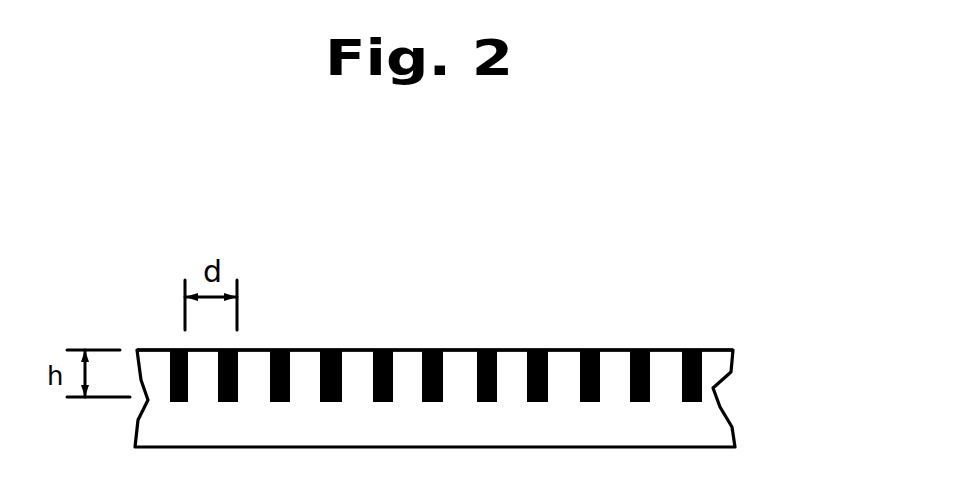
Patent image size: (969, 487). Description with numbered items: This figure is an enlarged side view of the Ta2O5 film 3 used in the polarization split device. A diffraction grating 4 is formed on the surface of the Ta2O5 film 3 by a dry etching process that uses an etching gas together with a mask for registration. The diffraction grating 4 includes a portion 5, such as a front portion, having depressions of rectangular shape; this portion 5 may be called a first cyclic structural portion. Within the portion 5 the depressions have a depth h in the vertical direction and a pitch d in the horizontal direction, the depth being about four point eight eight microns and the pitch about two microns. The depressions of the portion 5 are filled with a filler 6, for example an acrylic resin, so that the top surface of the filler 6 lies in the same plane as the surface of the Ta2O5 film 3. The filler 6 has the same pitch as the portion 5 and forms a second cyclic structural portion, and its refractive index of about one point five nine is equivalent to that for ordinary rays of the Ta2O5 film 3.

The Ta2O5 film 3 is at (713, 388).
The diffraction grating 4 is at (662, 312).
The portion 5 is at (558, 348).
The filler 6 is at (437, 348).